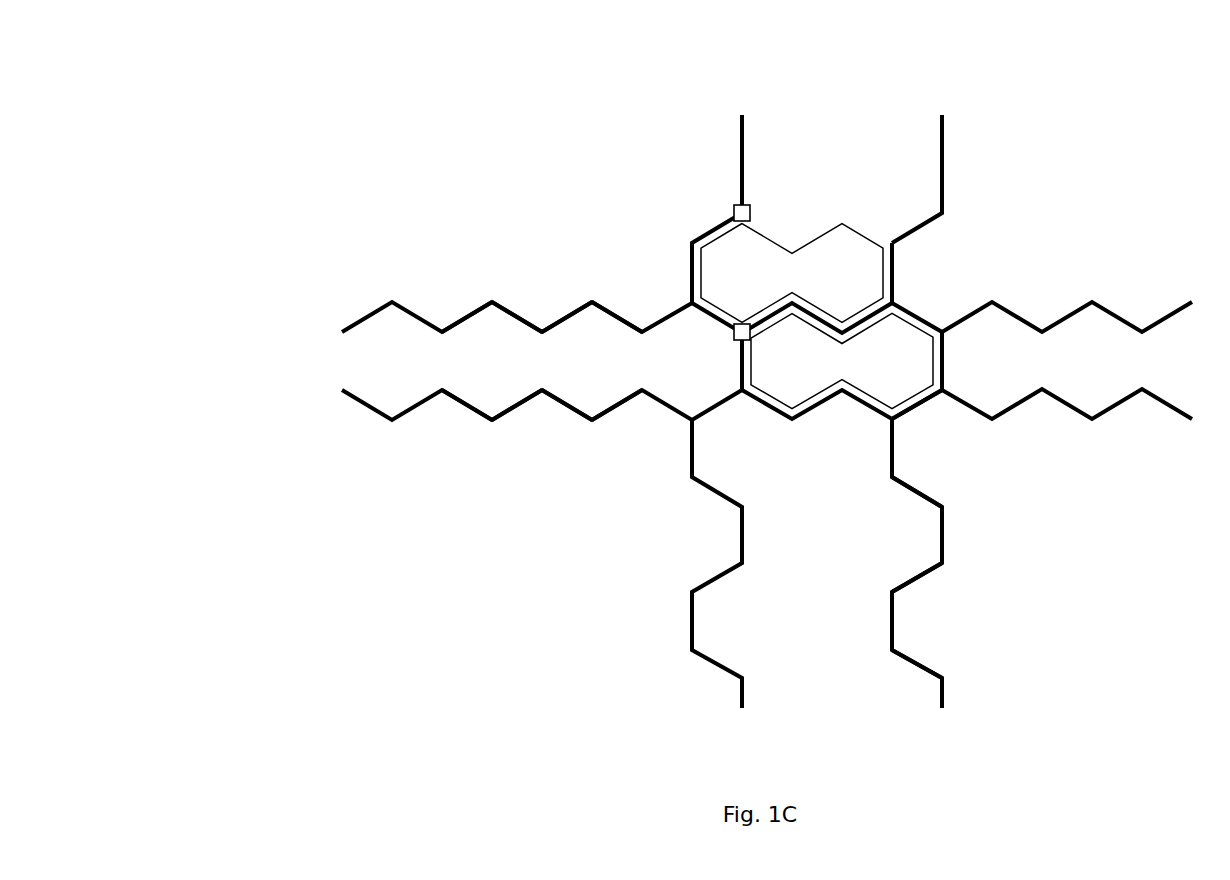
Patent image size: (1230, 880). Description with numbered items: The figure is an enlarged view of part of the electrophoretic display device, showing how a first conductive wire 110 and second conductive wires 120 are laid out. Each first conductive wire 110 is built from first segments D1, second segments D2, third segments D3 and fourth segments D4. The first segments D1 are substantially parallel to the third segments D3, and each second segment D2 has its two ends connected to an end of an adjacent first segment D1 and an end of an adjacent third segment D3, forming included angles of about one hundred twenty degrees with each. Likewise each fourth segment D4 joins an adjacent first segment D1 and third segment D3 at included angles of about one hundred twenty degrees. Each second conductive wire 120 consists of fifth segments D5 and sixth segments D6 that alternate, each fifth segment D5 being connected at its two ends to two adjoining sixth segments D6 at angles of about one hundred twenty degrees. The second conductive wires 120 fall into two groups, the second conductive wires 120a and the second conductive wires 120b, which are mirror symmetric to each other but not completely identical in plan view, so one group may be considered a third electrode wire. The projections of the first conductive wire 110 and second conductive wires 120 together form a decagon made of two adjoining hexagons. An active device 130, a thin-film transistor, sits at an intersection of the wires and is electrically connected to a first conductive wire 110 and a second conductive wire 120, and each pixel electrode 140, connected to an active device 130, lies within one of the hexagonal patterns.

The first conductive wire 110 is at (744, 116).
The second conductive wire 120 is at (462, 358).
The second conductive wire 120a is at (343, 330).
The second conductive wire 120b is at (343, 392).
The active device 130 is at (728, 197).
The pixel electrode 140 is at (770, 238).
The first segment D1 is at (945, 360).
The second segment D2 is at (925, 403).
The third segment D3 is at (890, 447).
The fourth segment D4 is at (912, 485).
The fifth segment D5 is at (457, 320).
The sixth segment D6 is at (504, 307).